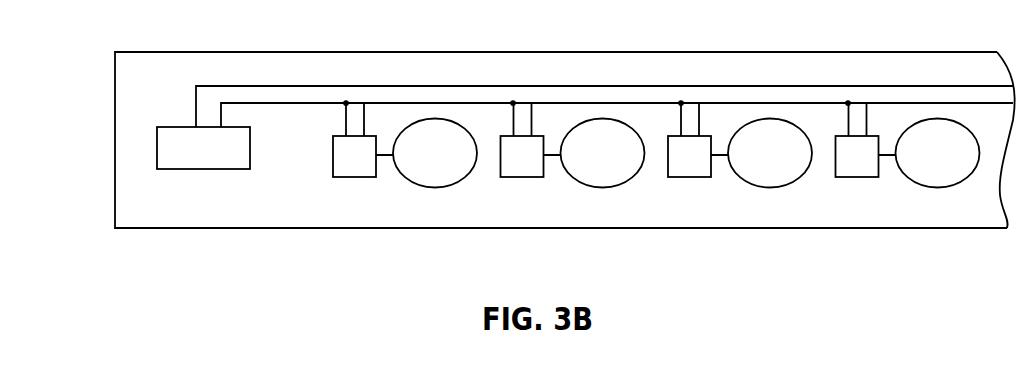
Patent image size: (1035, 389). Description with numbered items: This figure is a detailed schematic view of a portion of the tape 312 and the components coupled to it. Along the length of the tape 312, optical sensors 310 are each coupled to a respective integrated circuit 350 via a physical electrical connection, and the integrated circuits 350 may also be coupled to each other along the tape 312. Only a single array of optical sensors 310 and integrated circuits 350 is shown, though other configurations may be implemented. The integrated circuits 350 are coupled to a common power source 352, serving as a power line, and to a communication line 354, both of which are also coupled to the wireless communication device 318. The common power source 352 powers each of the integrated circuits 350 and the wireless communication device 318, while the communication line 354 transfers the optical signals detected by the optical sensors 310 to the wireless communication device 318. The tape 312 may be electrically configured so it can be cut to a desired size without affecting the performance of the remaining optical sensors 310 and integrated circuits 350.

The tape 312 is at (187, 229).
The common power source 352 is at (196, 105).
The communication line 354 is at (234, 103).
The wireless communication device 318 is at (157, 155).
The integrated circuit 350 is at (351, 178).
The optical sensor 310 is at (436, 187).